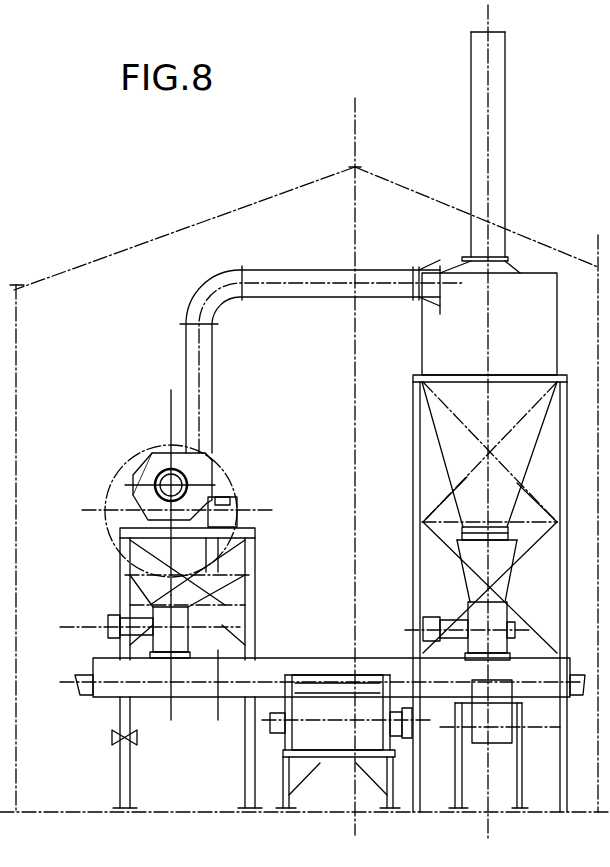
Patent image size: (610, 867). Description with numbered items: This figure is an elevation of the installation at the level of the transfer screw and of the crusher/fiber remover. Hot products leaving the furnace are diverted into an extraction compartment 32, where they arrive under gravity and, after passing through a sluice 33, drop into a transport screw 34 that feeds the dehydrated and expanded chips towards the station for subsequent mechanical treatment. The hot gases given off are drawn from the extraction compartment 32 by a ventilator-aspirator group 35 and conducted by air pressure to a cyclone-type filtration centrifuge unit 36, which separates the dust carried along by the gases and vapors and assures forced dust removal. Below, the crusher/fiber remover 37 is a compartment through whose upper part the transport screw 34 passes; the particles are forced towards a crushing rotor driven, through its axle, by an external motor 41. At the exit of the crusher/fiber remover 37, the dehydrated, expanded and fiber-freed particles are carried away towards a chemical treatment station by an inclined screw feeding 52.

The extraction compartment 32 is at (137, 557).
The sluice 33 is at (178, 621).
The transport screw 34 is at (262, 675).
The ventilator-aspirator group 35 is at (200, 470).
The cyclone-type filtration centrifuge unit 36 is at (452, 343).
The crusher/fiber remover 37 is at (270, 704).
The external motor 41 is at (402, 728).
The inclined screw feeding 52 is at (503, 728).